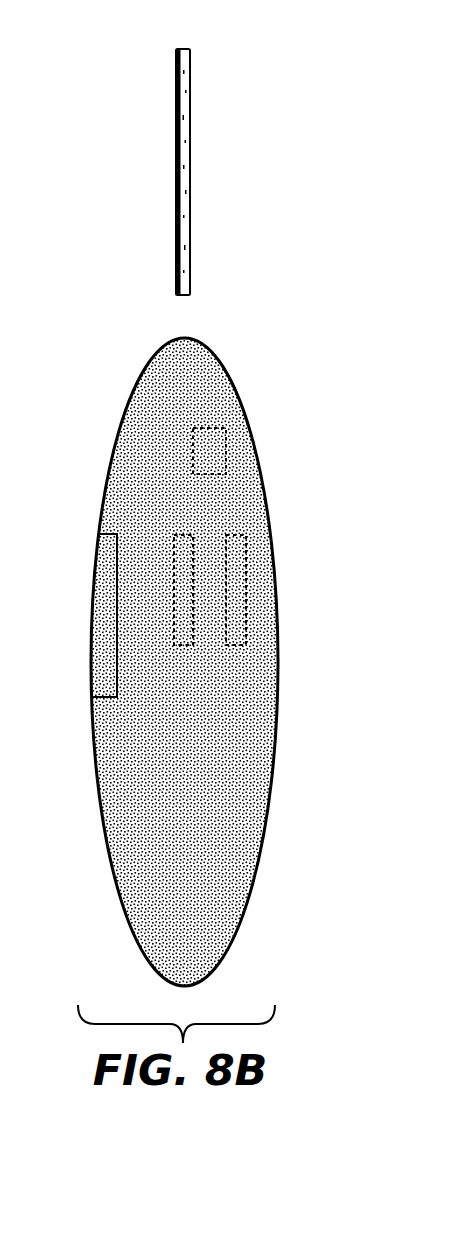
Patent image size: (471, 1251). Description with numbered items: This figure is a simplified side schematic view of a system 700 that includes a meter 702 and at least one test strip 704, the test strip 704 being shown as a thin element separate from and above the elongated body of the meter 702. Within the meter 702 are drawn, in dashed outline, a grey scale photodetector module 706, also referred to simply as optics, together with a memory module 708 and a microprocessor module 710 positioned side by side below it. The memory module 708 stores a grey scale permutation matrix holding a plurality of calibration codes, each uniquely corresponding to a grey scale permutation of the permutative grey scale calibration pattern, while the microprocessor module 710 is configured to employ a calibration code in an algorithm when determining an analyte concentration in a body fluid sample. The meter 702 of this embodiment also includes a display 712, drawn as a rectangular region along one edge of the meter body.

The system 700 is at (115, 68).
The meter 702 is at (151, 356).
The test strip 704 is at (176, 239).
The grey scale photodetector module 706 is at (213, 428).
The memory module 708 is at (235, 537).
The microprocessor module 710 is at (180, 537).
The display 712 is at (103, 552).